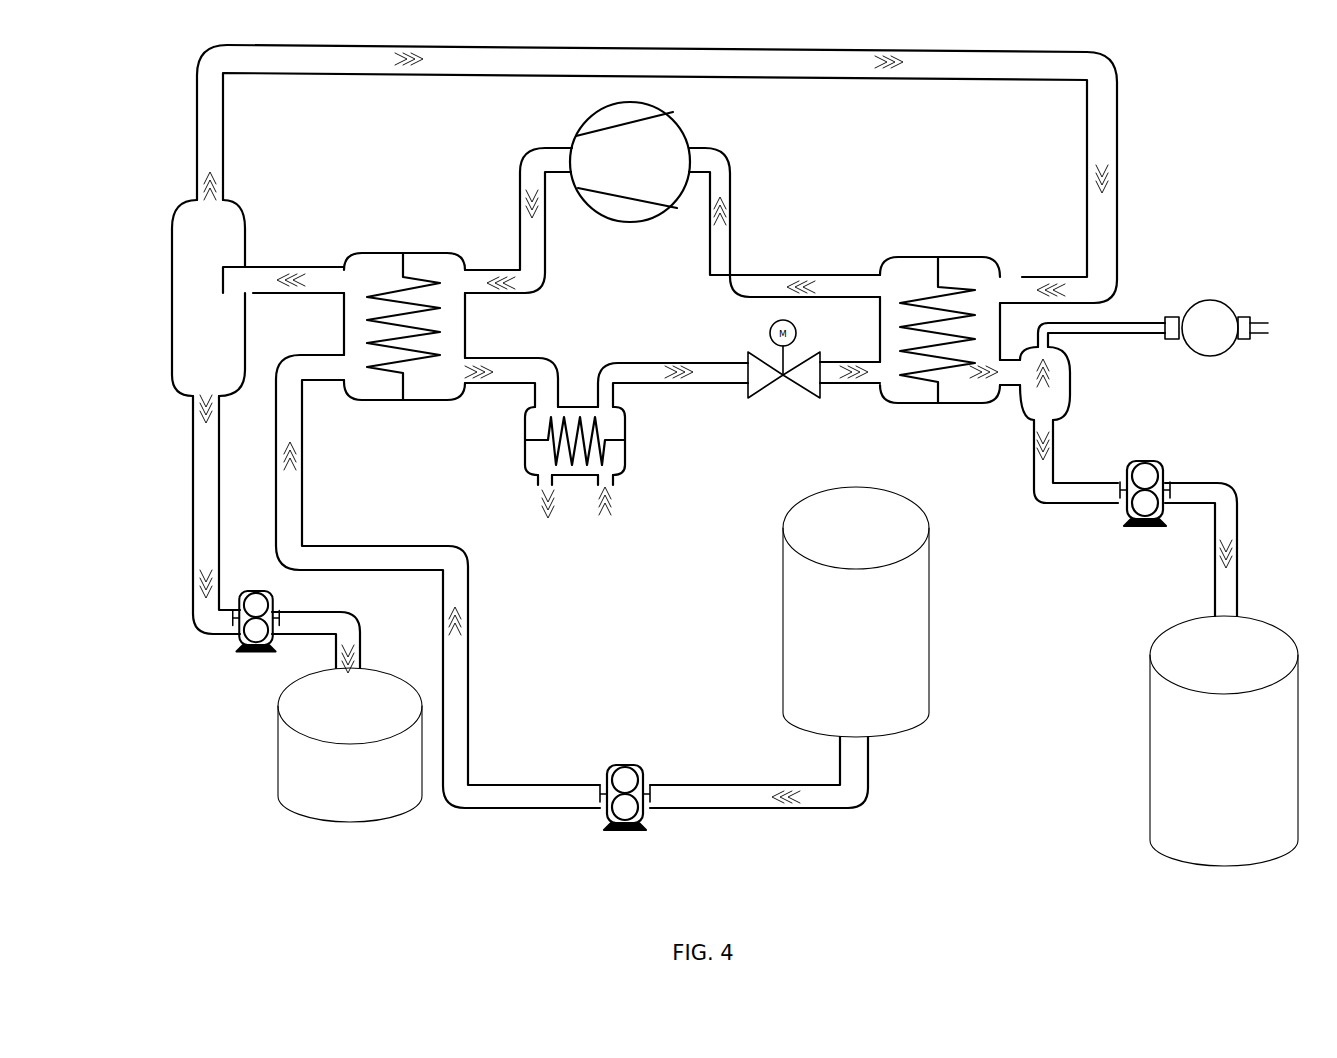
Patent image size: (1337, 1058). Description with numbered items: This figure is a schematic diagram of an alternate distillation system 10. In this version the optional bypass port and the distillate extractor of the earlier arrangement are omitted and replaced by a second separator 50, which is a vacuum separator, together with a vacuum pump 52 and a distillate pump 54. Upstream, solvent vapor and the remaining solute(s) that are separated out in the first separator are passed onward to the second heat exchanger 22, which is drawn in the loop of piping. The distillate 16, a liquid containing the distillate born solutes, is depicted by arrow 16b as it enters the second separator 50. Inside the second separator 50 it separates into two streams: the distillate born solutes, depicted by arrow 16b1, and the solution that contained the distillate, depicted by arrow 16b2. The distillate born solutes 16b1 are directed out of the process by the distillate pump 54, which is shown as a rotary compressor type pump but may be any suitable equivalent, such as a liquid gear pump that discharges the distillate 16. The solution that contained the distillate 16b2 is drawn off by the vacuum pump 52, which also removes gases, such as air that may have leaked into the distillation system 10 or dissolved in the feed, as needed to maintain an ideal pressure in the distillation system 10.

The distillation system 10 is at (1237, 92).
The second heat exchanger 22 is at (905, 256).
The vacuum pump 52 is at (1215, 302).
The solution that contained the distillate 16b2 is at (1048, 360).
The second separator 50 is at (1068, 391).
The distillate 16b is at (988, 375).
The distillate born solutes 16b1 is at (1042, 447).
The distillate pump 54 is at (1137, 525).
The distillate 16 is at (1211, 764).